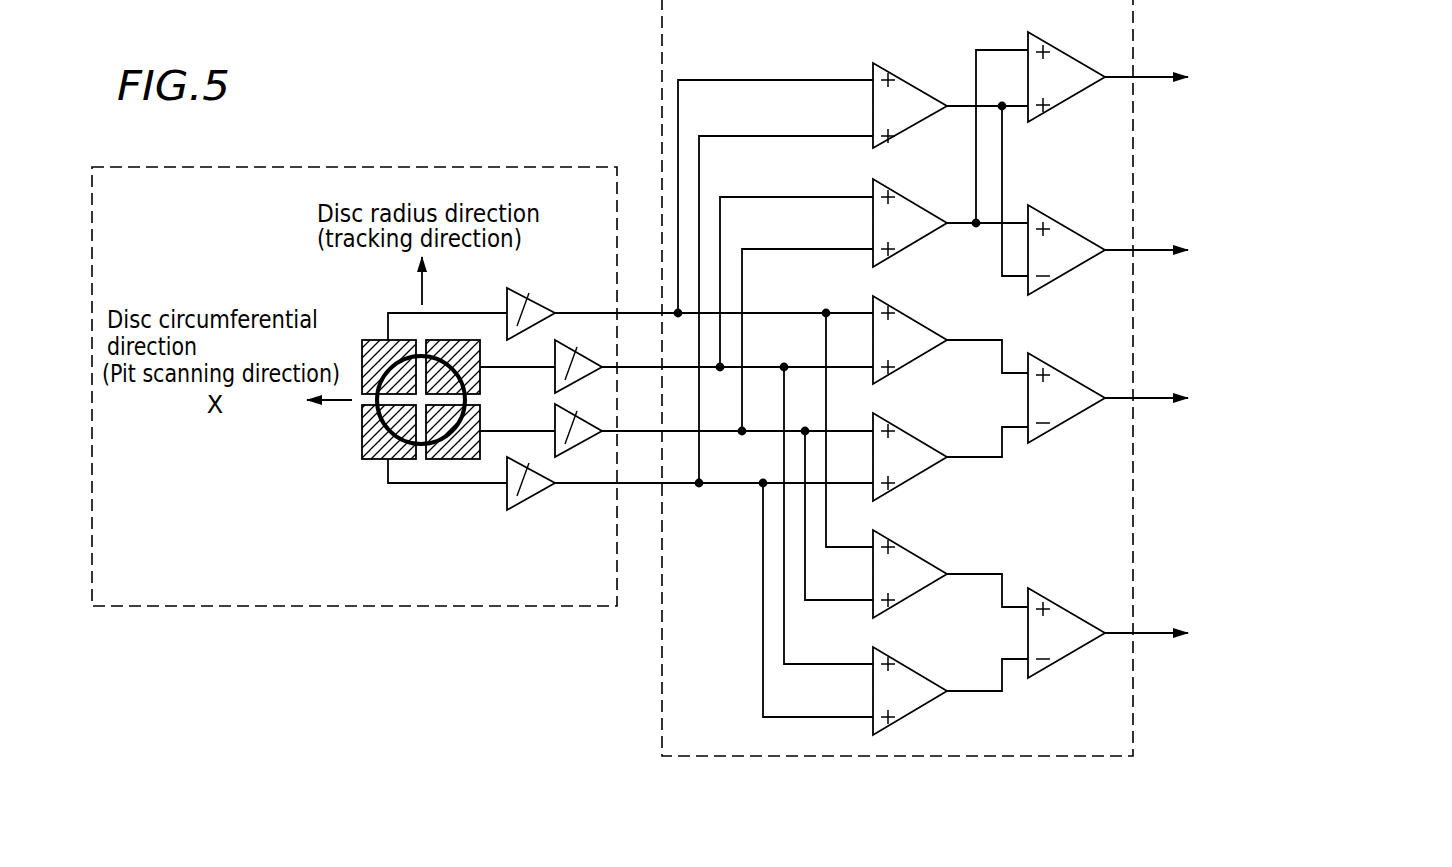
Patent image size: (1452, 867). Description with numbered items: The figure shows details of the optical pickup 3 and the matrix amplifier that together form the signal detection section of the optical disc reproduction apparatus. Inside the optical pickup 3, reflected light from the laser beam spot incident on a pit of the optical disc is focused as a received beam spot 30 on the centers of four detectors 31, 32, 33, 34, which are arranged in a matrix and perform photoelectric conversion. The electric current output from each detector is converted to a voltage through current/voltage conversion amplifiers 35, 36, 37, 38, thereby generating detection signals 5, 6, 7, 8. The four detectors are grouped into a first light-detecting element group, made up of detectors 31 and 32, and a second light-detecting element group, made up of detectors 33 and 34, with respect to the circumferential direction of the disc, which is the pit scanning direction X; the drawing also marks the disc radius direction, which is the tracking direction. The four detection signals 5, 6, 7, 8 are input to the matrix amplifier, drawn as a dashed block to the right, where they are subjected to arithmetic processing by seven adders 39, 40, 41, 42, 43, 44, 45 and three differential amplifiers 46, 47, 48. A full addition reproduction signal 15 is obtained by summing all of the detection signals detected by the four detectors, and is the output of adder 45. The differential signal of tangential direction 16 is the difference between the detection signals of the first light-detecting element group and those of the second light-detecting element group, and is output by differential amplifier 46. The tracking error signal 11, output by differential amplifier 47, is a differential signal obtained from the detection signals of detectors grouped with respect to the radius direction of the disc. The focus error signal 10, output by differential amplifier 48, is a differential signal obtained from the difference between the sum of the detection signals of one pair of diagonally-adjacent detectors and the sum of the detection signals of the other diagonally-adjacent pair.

The optical pickup 3 is at (493, 167).
The detection signal 5 is at (714, 300).
The detection signal 6 is at (737, 354).
The detection signal 7 is at (737, 418).
The detection signal 8 is at (714, 470).
The focus error signal 10 is at (1216, 642).
The tracking error signal 11 is at (1229, 408).
The full-addition reproduction signal 15 is at (1218, 70).
The differential signal of tangential direction 16 is at (1264, 245).
The received beam spot 30 is at (388, 459).
The detector 31 is at (362, 440).
The detector 32 is at (362, 350).
The detector 33 is at (450, 340).
The detector 34 is at (450, 460).
The current/voltage conversion amplifier 35 is at (538, 305).
The current/voltage conversion amplifier 36 is at (580, 360).
The current/voltage conversion amplifier 37 is at (580, 423).
The current/voltage conversion amplifier 38 is at (538, 492).
The adder 39 is at (933, 97).
The adder 40 is at (933, 212).
The adder 41 is at (933, 330).
The adder 42 is at (933, 447).
The adder 43 is at (933, 565).
The adder 44 is at (933, 682).
The adder 45 is at (1090, 65).
The differential amplifier 46 is at (1090, 238).
The differential amplifier 47 is at (1090, 385).
The differential amplifier 48 is at (1090, 621).